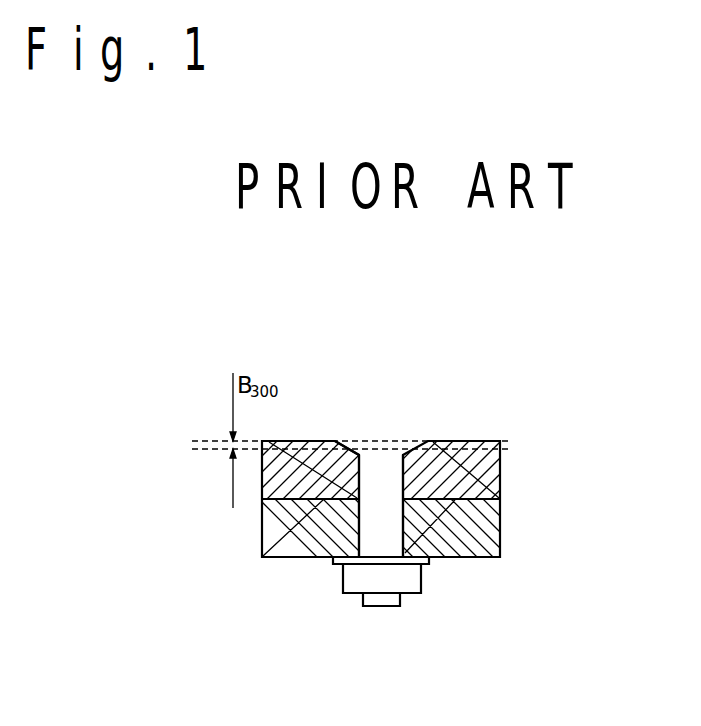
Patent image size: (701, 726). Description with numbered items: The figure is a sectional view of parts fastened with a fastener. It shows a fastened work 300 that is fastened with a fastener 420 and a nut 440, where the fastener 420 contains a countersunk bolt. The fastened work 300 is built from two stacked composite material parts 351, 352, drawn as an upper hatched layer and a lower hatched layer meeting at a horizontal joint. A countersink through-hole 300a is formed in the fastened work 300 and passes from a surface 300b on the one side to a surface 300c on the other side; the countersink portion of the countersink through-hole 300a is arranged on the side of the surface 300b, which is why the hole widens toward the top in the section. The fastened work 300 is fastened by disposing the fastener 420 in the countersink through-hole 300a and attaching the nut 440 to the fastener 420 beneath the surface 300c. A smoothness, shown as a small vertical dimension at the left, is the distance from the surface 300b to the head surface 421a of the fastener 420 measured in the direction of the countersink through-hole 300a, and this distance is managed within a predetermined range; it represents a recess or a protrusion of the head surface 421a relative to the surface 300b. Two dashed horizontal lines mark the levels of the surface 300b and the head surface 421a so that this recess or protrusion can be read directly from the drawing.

The fastened work 300 is at (440, 476).
The countersink through-hole 300a is at (352, 432).
The surface on the one side 300b is at (463, 441).
The surface on the other side 300c is at (487, 558).
The composite material part 351 is at (497, 468).
The composite material part 352 is at (497, 528).
The head surface 421a is at (381, 448).
The nut 440 is at (421, 580).
The fastener 420 is at (380, 608).